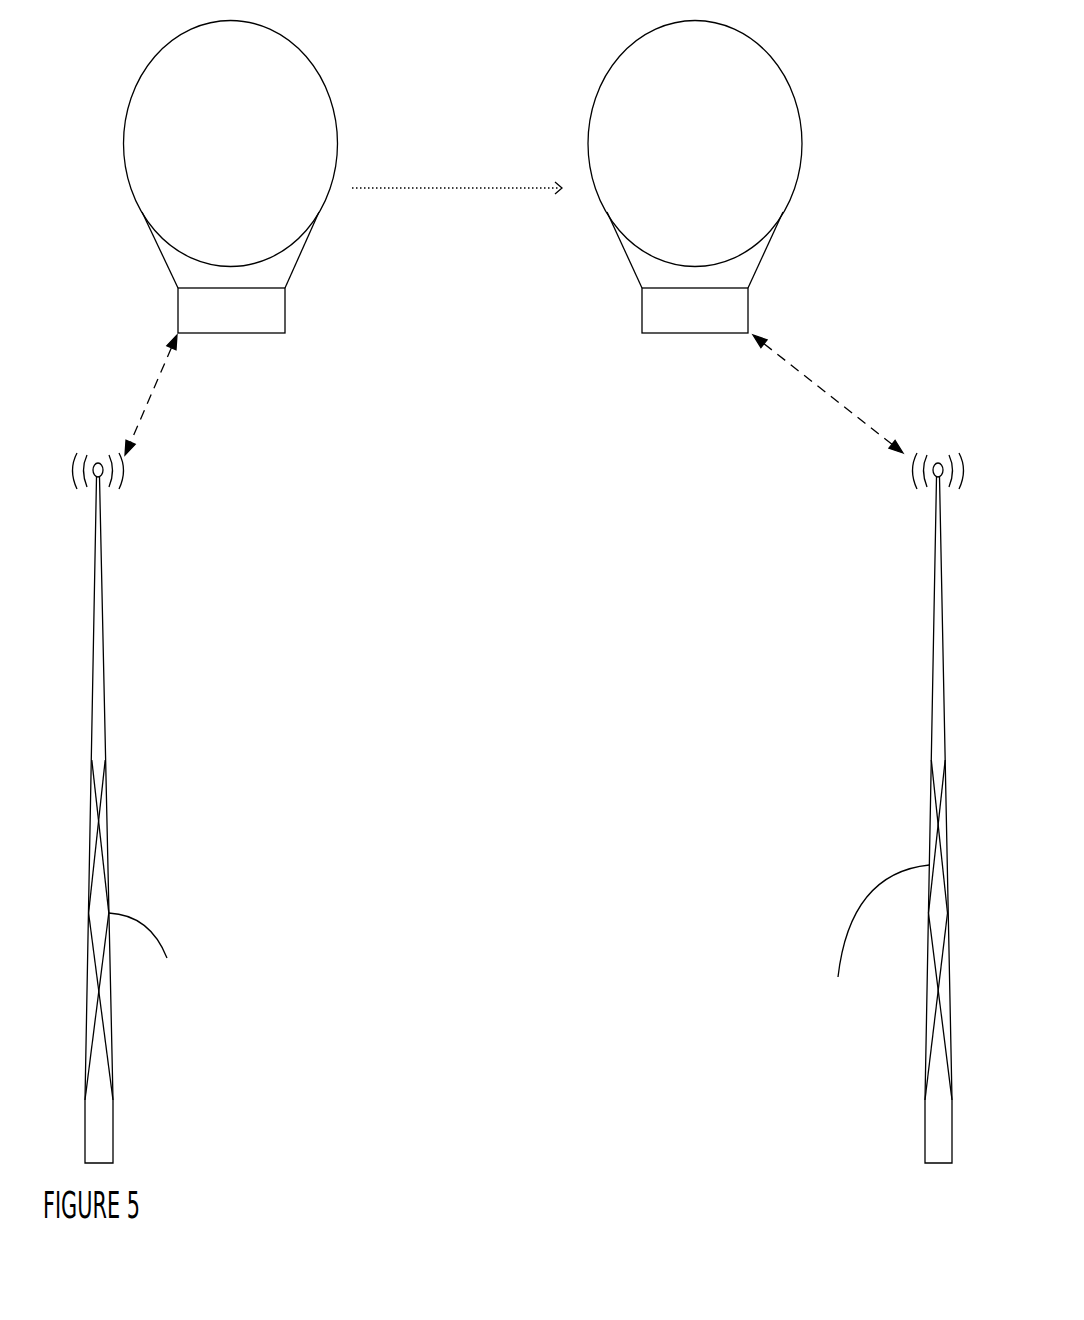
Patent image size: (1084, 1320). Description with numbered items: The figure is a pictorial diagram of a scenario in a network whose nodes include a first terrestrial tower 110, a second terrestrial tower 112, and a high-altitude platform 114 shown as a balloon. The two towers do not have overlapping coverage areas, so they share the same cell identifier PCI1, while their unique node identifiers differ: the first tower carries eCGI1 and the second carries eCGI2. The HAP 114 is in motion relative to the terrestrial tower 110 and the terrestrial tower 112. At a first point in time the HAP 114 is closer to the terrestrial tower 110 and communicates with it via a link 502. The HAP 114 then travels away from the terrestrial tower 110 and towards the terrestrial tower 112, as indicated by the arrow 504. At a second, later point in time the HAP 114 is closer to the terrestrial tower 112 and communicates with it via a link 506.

The high-altitude platform 114 is at (213, 151).
The first terrestrial tower 110 is at (152, 778).
The second terrestrial tower 112 is at (878, 778).
The link 502 is at (158, 395).
The arrow 504 is at (457, 168).
The link 506 is at (828, 394).